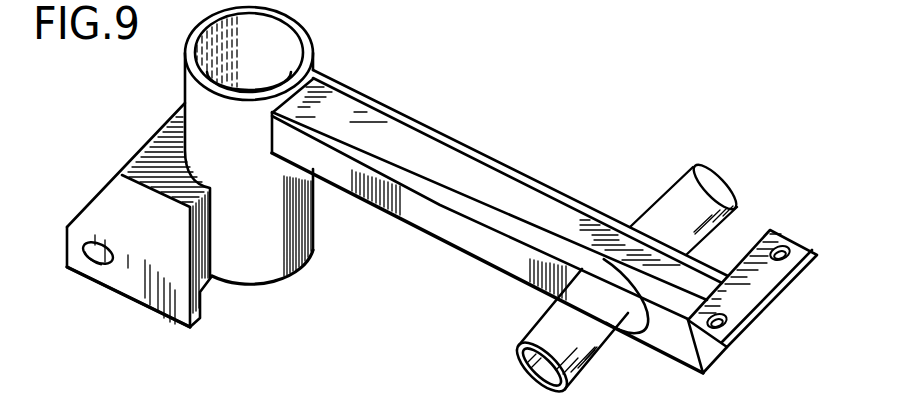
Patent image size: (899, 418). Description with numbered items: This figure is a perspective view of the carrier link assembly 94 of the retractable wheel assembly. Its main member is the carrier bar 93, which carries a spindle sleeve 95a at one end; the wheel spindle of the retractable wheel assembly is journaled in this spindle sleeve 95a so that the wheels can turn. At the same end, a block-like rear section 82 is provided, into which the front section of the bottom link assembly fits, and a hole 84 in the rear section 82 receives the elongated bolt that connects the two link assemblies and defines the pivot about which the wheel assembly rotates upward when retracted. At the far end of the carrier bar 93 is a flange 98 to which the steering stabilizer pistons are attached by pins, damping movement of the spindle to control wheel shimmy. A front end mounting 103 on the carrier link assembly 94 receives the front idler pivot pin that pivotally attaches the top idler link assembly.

The rear section 82 is at (118, 207).
The hole 84 is at (88, 266).
The carrier bar 93 is at (268, 258).
The spindle sleeve 95a is at (320, 35).
The carrier link assembly 94 is at (509, 149).
The flange 98 is at (747, 300).
The front end mounting 103 is at (545, 330).